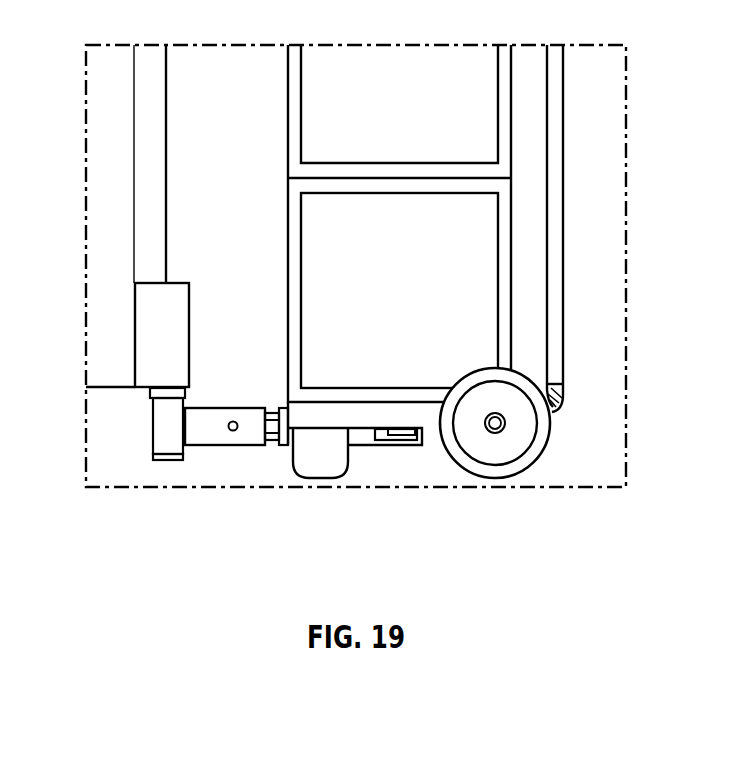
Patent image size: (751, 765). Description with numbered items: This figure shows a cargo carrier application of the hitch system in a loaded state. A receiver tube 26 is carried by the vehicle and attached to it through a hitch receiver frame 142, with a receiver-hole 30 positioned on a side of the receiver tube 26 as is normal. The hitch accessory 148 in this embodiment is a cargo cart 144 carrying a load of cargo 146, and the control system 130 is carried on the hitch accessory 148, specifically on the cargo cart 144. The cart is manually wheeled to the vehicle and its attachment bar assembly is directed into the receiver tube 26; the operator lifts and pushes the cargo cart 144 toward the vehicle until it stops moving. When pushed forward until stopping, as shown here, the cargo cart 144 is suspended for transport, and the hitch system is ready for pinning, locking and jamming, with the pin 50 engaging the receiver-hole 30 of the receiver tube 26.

The cargo 146 is at (423, 295).
The cargo cart 144 is at (565, 306).
The hitch receiver frame 142 is at (163, 427).
The receiver tube 26 is at (207, 427).
The pin 50 is at (233, 421).
The receiver-hole 30 is at (237, 431).
The hitch accessory 148 is at (270, 457).
The control system 130 is at (403, 435).